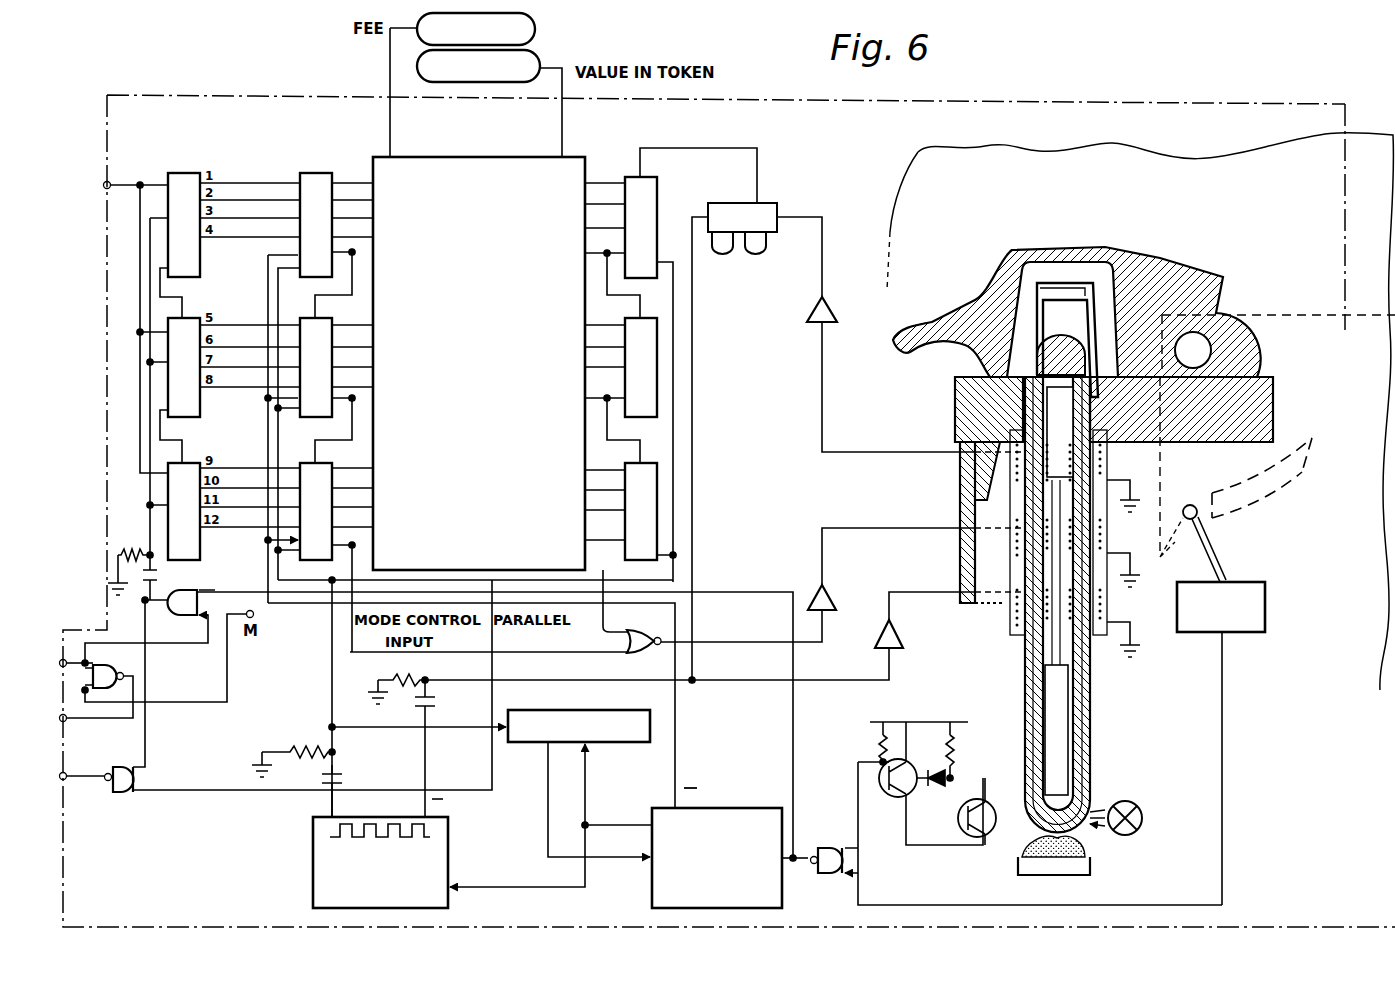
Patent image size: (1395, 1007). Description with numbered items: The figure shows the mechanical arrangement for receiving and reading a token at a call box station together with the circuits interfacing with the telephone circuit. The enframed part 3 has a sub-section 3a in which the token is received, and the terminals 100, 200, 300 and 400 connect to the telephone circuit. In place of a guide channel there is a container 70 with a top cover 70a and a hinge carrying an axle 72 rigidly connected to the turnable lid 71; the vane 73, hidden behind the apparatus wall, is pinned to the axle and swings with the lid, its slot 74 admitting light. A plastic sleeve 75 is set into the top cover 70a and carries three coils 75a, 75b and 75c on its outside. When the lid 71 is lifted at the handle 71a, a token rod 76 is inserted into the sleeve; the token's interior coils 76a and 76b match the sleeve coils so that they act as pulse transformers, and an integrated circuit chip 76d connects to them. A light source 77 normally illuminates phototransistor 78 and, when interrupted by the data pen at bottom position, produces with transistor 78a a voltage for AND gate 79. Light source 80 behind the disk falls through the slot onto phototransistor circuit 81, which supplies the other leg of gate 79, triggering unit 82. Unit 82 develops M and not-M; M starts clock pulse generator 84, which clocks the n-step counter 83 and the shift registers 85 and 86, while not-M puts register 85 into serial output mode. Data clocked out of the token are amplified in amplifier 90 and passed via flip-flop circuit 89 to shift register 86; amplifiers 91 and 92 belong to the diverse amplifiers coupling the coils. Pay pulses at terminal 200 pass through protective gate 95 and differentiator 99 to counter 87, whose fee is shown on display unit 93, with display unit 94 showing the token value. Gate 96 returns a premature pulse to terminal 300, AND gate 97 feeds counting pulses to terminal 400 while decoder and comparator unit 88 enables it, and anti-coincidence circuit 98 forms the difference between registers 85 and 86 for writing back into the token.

The enframed part 3 is at (118, 330).
The sub-section 3a is at (895, 192).
The container 70 is at (960, 600).
The top cover 70a is at (1220, 440).
The turnable lid 71 is at (1077, 247).
The handle 71a is at (895, 347).
The axle 72 is at (1200, 350).
The vane 73 is at (1325, 312).
The slot 74 is at (1305, 478).
The plastic sleeve 75 is at (1090, 706).
The coil 75a is at (1015, 633).
The coil 75b is at (1012, 482).
The coil 75c is at (1012, 556).
The token rod 76 is at (1062, 290).
The coil 76a is at (1097, 625).
The coil 76b is at (1047, 470).
The integrated circuit chip 76d is at (1060, 740).
The light source 77 is at (1132, 812).
The phototransistor 78 is at (992, 838).
The transistor 78a is at (912, 795).
The AND gate 79 is at (830, 848).
The light source 80 is at (1162, 560).
The phototransistor circuit 81 is at (1240, 640).
The trigger unit 82 is at (738, 808).
The n-step counter 83 is at (575, 710).
The clock pulse generator 84 is at (313, 850).
The shift register 85 is at (322, 178).
The shift register 86 is at (633, 180).
The counter 87 is at (182, 175).
The decoder and comparator unit 88 is at (479, 363).
The flip-flop circuit 89 is at (770, 240).
The amplifier 90 is at (825, 297).
The amplifier 91 is at (876, 636).
The amplifier 92 is at (812, 588).
The display unit 93 is at (535, 30).
The display unit 94 is at (540, 55).
The protective gate 95 is at (180, 590).
The gate 96 is at (110, 668).
The AND gate 97 is at (120, 795).
The anti-coincidence circuit 98 is at (633, 657).
The differentiator 99 is at (112, 605).
The terminal 100 is at (118, 186).
The terminal 200 is at (80, 674).
The terminal 300 is at (97, 710).
The terminal 400 is at (82, 768).